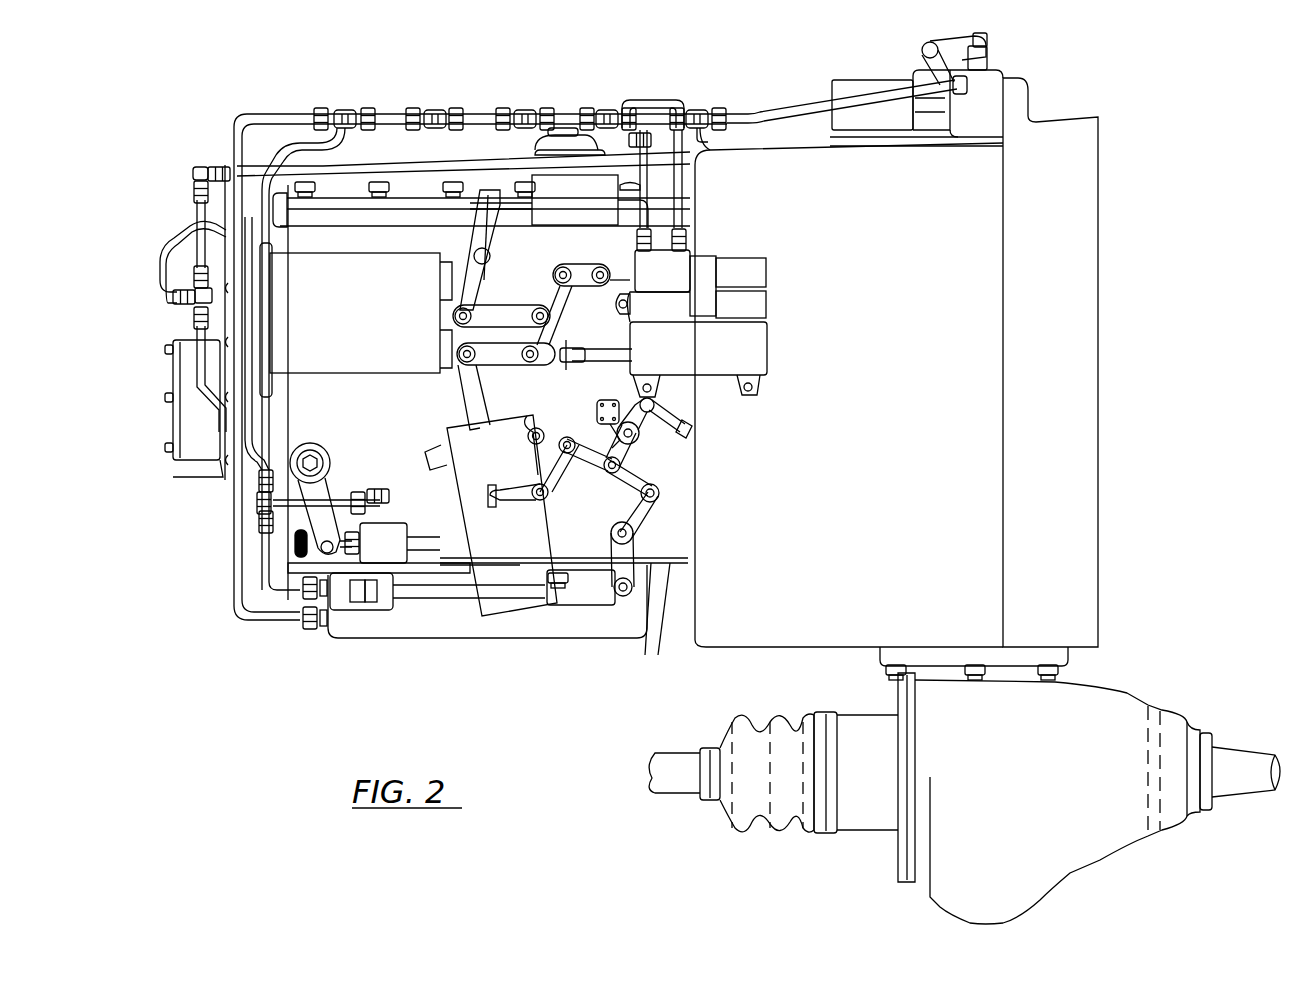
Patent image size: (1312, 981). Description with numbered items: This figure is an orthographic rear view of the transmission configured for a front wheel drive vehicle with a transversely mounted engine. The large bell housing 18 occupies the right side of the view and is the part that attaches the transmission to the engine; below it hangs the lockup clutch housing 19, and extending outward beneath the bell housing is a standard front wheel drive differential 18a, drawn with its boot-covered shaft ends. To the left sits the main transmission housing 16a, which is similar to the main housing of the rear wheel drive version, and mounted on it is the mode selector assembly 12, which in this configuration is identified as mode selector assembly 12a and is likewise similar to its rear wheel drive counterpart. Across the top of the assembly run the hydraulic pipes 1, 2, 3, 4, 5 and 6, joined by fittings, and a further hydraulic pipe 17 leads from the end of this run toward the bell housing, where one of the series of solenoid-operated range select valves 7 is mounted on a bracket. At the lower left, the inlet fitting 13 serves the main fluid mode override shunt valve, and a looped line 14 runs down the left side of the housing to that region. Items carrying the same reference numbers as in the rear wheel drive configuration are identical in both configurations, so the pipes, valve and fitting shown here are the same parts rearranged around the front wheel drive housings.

The hydraulic pipe 1 is at (280, 148).
The hydraulic pipe 2 is at (384, 112).
The hydraulic pipe 3 is at (480, 112).
The hydraulic pipe 4 is at (566, 112).
The hydraulic pipe 5 is at (651, 112).
The hydraulic pipe 6 is at (702, 108).
The solenoid-operated range select valve 7 is at (862, 80).
The mode selector assembly 12 is at (265, 615).
The mode selector assembly 12a is at (566, 640).
The inlet fitting 13 is at (318, 612).
The hydraulic line 14 is at (234, 576).
The main transmission housing 16a is at (660, 596).
The hydraulic pipe 17 is at (775, 126).
The bell housing 18 is at (1102, 352).
The front wheel drive differential 18a is at (1125, 690).
The lockup clutch housing 19 is at (730, 650).